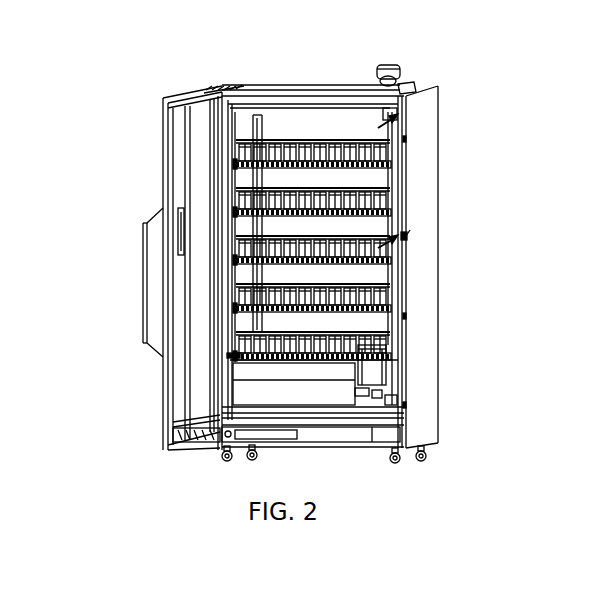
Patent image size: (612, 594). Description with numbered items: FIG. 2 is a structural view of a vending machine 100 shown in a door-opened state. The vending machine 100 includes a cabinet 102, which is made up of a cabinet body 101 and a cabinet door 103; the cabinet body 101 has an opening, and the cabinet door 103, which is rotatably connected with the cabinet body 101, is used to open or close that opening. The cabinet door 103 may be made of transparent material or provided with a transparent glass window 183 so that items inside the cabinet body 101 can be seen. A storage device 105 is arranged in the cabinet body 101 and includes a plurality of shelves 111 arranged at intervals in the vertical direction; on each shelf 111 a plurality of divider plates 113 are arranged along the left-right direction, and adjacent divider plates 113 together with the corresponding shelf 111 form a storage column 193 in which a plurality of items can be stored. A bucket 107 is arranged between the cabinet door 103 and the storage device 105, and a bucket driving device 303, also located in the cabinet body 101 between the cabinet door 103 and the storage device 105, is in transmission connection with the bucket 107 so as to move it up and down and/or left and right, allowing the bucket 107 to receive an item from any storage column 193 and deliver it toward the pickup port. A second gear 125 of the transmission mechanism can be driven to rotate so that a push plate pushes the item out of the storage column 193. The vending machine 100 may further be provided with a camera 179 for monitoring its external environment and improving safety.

The vending machine 100 is at (331, 57).
The cabinet body 101 is at (250, 84).
The cabinet 102 is at (172, 23).
The cabinet door 103 is at (177, 117).
The storage device 105 is at (385, 122).
The bucket 107 is at (373, 363).
The shelf 111 is at (387, 160).
The divider plate 113 is at (387, 298).
The second gear 125 is at (387, 266).
The camera 179 is at (401, 76).
The transparent glass window 183 is at (205, 164).
The storage column 193 is at (410, 230).
The bucket driving device 303 is at (387, 337).